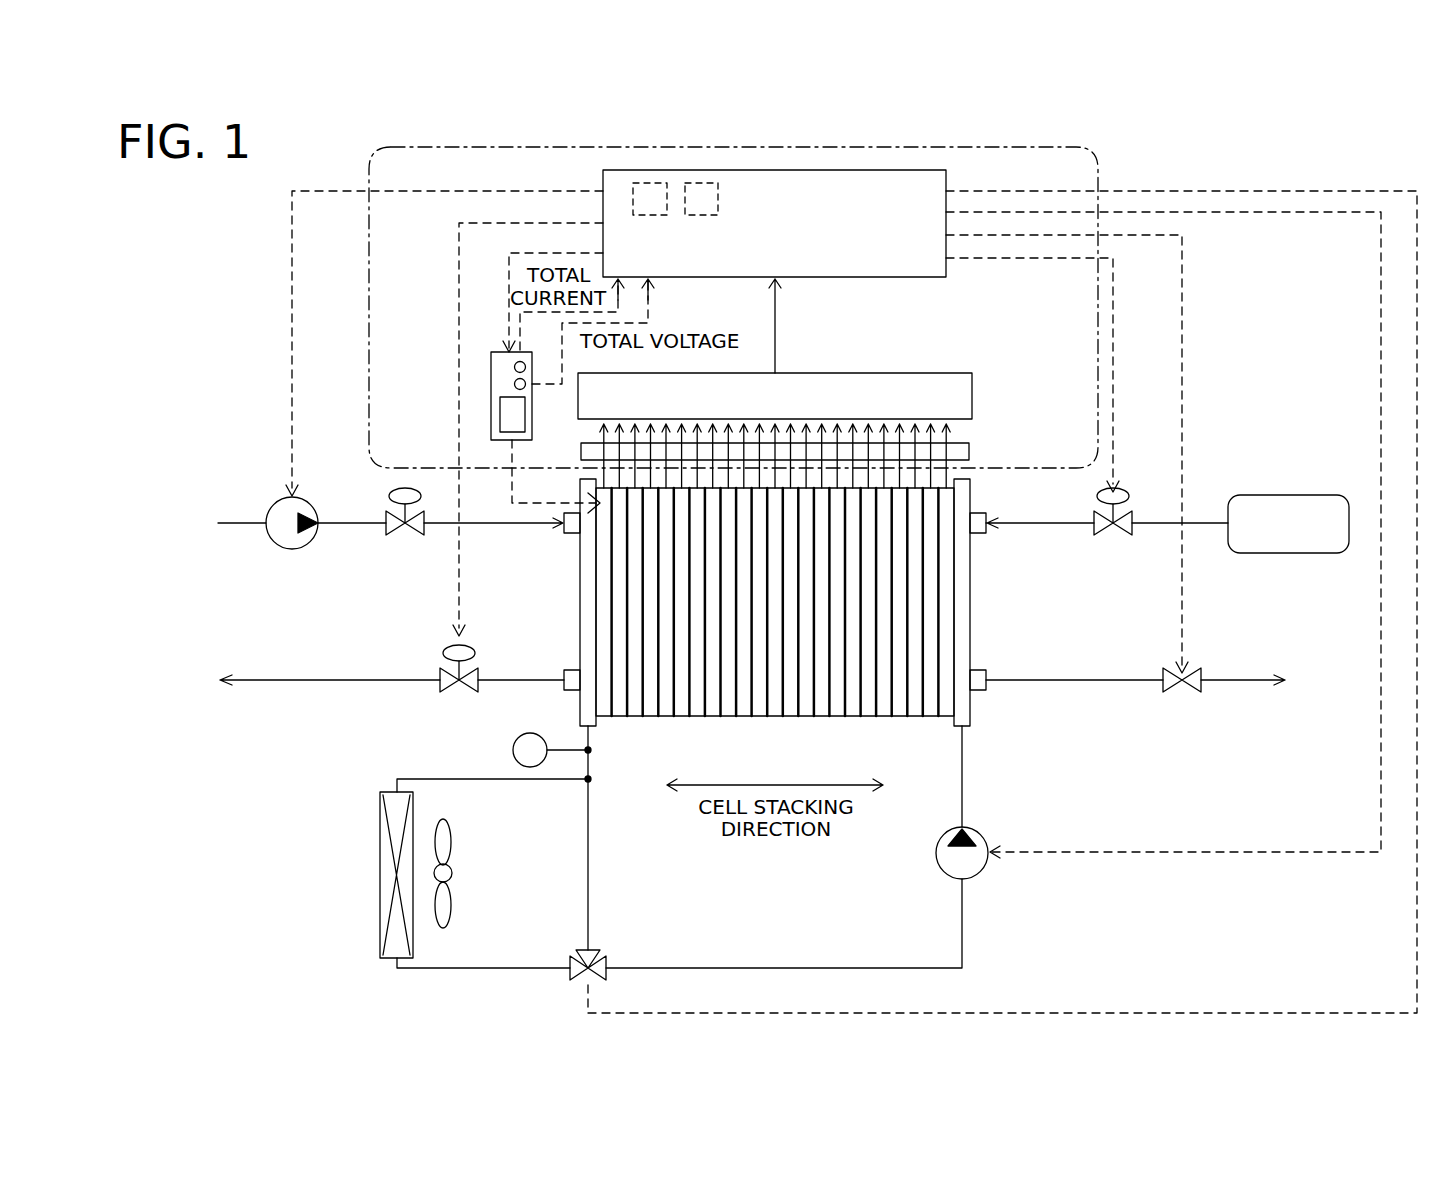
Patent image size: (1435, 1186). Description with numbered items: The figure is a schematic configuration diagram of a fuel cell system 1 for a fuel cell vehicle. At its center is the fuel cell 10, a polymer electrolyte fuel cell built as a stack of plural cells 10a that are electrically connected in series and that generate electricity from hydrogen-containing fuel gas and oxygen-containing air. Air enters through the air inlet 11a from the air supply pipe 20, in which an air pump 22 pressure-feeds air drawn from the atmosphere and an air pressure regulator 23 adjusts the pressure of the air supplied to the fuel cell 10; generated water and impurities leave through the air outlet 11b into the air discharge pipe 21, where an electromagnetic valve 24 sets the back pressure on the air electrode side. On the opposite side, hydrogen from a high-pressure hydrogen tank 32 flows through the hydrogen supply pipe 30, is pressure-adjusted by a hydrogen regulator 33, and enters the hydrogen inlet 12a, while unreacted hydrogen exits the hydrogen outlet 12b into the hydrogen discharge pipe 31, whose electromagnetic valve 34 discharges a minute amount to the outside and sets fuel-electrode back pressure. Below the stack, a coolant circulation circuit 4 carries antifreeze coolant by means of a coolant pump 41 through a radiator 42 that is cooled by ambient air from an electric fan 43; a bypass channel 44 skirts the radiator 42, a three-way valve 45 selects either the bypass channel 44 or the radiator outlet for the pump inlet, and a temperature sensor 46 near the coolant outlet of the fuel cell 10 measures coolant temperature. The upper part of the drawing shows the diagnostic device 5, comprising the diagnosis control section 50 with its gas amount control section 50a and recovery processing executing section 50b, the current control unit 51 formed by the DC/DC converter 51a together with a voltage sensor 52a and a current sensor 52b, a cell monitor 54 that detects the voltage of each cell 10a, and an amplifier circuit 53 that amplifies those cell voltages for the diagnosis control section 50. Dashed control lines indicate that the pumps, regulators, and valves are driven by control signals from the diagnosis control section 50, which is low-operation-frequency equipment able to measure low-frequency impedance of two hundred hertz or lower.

The fuel cell system 1 is at (292, 969).
The coolant circulation circuit 4 is at (963, 778).
The diagnostic device 5 is at (1050, 145).
The fuel cell 10 is at (785, 635).
The cell 10a is at (637, 712).
The air inlet 11a is at (560, 525).
The air outlet 11b is at (560, 688).
The hydrogen inlet 12a is at (990, 533).
The hydrogen outlet 12b is at (990, 690).
The air supply pipe 20 is at (347, 521).
The air discharge pipe 21 is at (285, 681).
The air pump 22 is at (287, 549).
The air pressure regulator 23 is at (400, 537).
The electromagnetic valve 24 is at (452, 694).
The hydrogen supply pipe 30 is at (1045, 522).
The hydrogen discharge pipe 31 is at (1076, 679).
The high-pressure hydrogen tank 32 is at (1286, 555).
The hydrogen regulator 33 is at (1108, 537).
The electromagnetic valve 34 is at (1176, 694).
The coolant pump 41 is at (983, 871).
The radiator 42 is at (380, 868).
The electric fan 43 is at (452, 848).
The bypass channel 44 is at (589, 846).
The three-way valve 45 is at (597, 950).
The temperature sensor 46 is at (513, 751).
The diagnosis control section 50 is at (820, 190).
The gas amount control section 50a is at (652, 178).
The recovery processing executing section 50b is at (703, 178).
The current control unit 51 is at (460, 364).
The DC/DC converter 51a is at (500, 418).
The voltage sensor 52a is at (514, 384).
The current sensor 52b is at (513, 367).
The amplifier circuit 53 is at (972, 402).
The cell monitor 54 is at (969, 452).